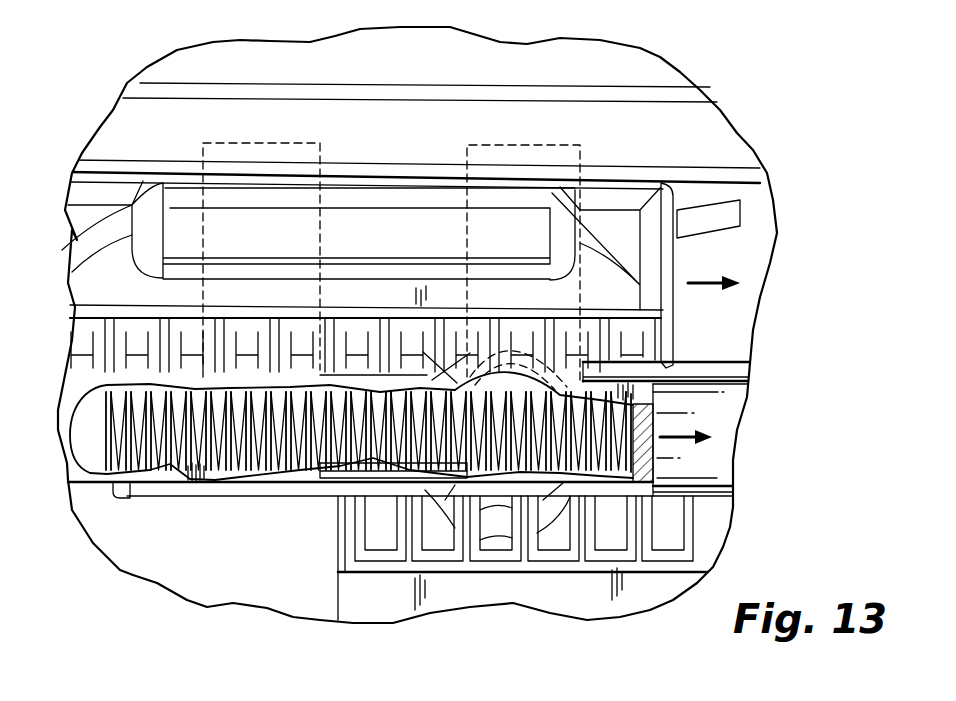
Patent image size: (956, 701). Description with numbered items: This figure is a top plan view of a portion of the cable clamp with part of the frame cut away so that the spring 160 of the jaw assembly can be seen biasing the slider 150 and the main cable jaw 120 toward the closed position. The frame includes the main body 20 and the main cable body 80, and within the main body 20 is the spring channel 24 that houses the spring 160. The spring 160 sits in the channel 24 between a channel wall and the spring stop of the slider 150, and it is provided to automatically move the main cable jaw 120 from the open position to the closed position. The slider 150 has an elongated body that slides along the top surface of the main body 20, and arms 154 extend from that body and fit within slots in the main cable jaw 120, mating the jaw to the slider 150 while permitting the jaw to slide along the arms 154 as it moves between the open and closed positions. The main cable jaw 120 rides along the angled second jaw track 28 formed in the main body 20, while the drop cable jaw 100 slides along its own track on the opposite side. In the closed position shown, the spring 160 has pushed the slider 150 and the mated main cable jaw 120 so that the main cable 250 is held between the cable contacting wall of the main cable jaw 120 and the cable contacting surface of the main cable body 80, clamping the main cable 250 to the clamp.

The main cable body 80 is at (250, 62).
The main cable 250 is at (123, 133).
The arms 154 is at (330, 146).
The second jaw track 28 is at (705, 220).
The main cable jaw 120 is at (683, 261).
The main body 20 is at (730, 330).
The spring channel 24 is at (720, 410).
The slider 150 is at (54, 396).
The spring 160 is at (243, 450).
The drop cable jaw 100 is at (325, 600).